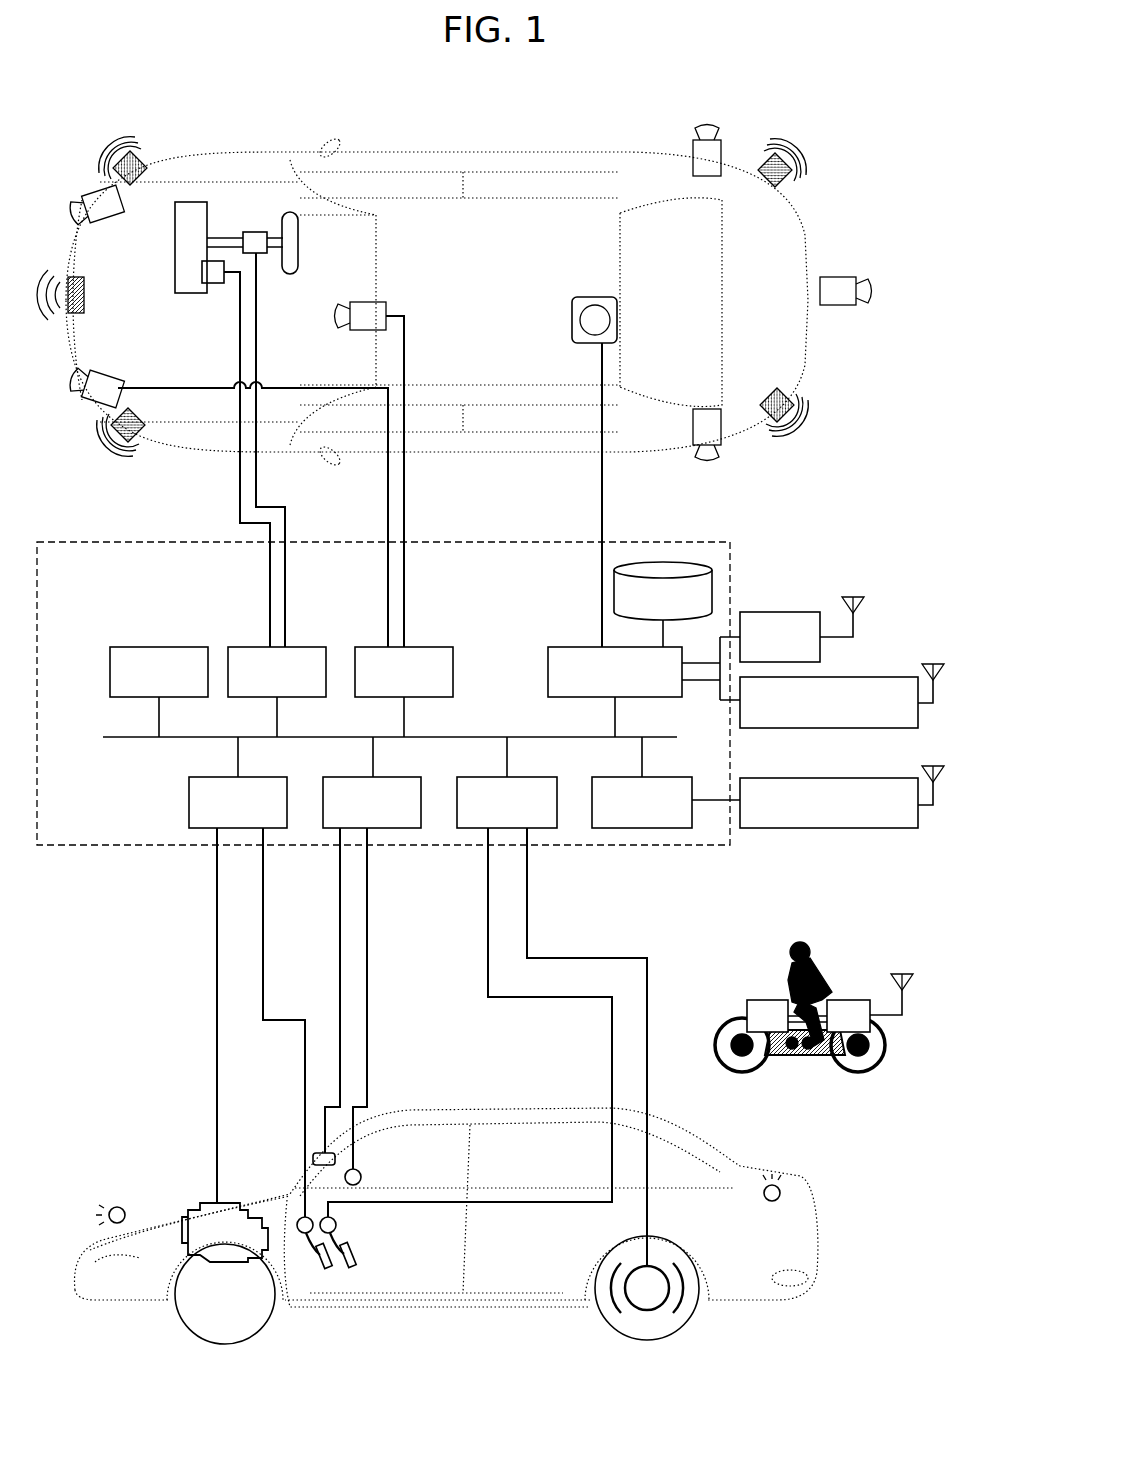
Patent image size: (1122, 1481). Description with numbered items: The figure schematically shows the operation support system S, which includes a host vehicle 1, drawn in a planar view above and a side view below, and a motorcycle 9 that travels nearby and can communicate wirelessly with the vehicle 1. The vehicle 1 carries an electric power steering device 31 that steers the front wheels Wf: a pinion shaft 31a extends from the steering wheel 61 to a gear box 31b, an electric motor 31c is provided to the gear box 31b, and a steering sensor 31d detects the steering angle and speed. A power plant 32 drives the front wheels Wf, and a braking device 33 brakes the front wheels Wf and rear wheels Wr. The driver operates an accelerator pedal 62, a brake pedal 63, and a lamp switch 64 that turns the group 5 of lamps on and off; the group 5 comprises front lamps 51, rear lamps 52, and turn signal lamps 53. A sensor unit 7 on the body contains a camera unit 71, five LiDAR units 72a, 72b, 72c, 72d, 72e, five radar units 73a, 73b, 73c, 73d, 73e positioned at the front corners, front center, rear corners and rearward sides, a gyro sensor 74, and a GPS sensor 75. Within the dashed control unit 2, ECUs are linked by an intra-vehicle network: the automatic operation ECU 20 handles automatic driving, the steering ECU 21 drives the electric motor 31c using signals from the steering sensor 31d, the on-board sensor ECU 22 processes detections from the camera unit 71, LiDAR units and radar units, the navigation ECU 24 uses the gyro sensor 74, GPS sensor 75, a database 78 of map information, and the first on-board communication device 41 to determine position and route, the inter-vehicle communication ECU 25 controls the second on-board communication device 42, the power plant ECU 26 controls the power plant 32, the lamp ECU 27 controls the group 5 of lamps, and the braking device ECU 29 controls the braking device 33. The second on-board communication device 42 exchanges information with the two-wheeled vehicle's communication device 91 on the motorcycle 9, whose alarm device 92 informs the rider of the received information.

The operation support system S is at (905, 141).
The vehicle 1 is at (870, 228).
The control unit 2 is at (497, 542).
The group of lamps 5 is at (86, 1166).
The sensor unit 7 is at (812, 112).
The motorcycle 9 is at (858, 904).
The automatic operation ECU 20 is at (155, 647).
The steering ECU 21 is at (303, 647).
The on-board sensor ECU 22 is at (433, 647).
The navigation ECU 24 is at (556, 647).
The inter-vehicle communication ECU 25 is at (604, 828).
The power plant ECU 26 is at (203, 828).
The lamp ECU 27 is at (330, 828).
The braking device ECU 29 is at (468, 828).
The electric power steering device 31 is at (218, 178).
The pinion shaft 31a is at (220, 238).
The gear box 31b is at (192, 202).
The electric motor 31c is at (213, 283).
The steering sensor 31d is at (256, 232).
The power plant 32 is at (203, 1203).
The braking device 33 is at (665, 1300).
The first on-board communication device 41 is at (780, 728).
The second on-board communication device 42 is at (768, 828).
The front lamps 51 is at (118, 1207).
The rear lamps 52 is at (780, 1193).
The turn signal lamps 53 is at (361, 1177).
The steering wheel 61 is at (298, 236).
The accelerator pedal 62 is at (330, 1272).
The brake pedal 63 is at (353, 1272).
The lamp switch 64 is at (313, 1160).
The camera unit 71 is at (373, 302).
The first LiDAR unit 72a is at (108, 218).
The second LiDAR unit 72b is at (108, 380).
The third LiDAR unit 72c is at (815, 286).
The fourth LiDAR unit 72d is at (702, 158).
The fifth LiDAR unit 72e is at (702, 436).
The first radar unit 73a is at (138, 152).
The second radar unit 73b is at (123, 440).
The third radar unit 73c is at (86, 293).
The fourth radar unit 73d is at (768, 152).
The fifth radar unit 73e is at (770, 425).
The gyro sensor 74 is at (572, 320).
The GPS sensor 75 is at (800, 612).
The database of map information 78 is at (668, 562).
The two-wheeled vehicle's communication device 91 is at (850, 1000).
The alarm device 92 is at (753, 1000).
The front wheels Wf is at (210, 1330).
The rear wheels Wr is at (637, 1332).